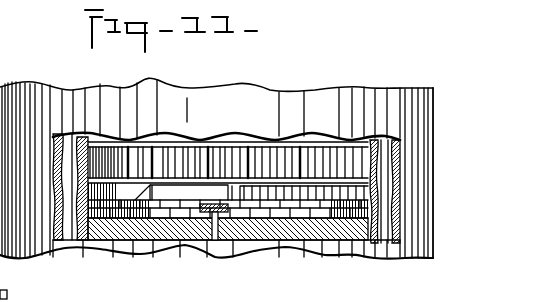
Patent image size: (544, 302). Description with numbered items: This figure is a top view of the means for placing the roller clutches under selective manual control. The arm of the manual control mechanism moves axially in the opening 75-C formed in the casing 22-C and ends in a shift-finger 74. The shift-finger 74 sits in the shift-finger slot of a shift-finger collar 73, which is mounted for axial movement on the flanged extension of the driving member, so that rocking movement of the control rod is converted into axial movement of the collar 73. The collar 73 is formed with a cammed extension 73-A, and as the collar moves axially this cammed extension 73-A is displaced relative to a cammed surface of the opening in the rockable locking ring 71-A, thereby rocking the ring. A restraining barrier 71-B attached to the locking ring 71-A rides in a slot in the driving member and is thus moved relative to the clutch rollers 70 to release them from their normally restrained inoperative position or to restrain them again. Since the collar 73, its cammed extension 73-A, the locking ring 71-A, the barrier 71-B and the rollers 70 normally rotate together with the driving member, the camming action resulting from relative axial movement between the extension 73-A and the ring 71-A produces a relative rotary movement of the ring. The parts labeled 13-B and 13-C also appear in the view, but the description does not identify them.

The side wall 13-B is at (387, 167).
The side wall 13-C is at (130, 157).
The casing 22-C is at (419, 118).
The clutch rollers 70 is at (198, 162).
The locking ring 71-A is at (280, 180).
The restraining barrier 71-B is at (162, 160).
The shift-finger collar 73 is at (305, 220).
The cammed extension 73-A is at (148, 186).
The shift-finger 74 is at (202, 213).
The opening 75-C is at (215, 224).